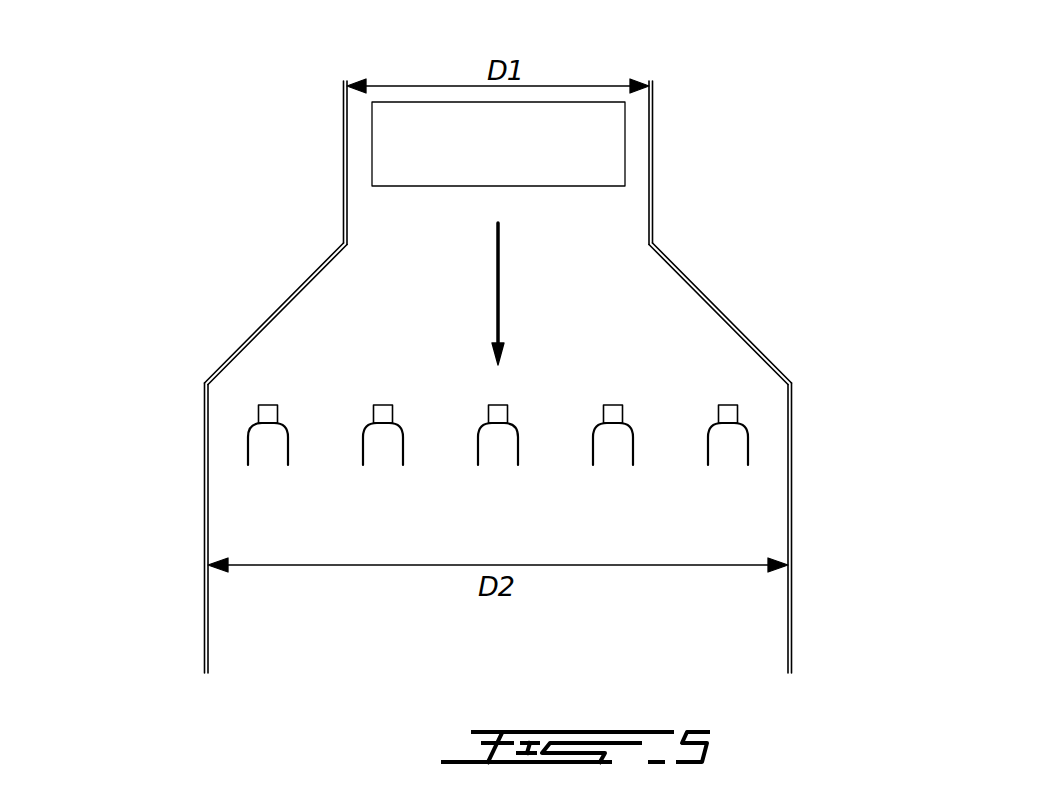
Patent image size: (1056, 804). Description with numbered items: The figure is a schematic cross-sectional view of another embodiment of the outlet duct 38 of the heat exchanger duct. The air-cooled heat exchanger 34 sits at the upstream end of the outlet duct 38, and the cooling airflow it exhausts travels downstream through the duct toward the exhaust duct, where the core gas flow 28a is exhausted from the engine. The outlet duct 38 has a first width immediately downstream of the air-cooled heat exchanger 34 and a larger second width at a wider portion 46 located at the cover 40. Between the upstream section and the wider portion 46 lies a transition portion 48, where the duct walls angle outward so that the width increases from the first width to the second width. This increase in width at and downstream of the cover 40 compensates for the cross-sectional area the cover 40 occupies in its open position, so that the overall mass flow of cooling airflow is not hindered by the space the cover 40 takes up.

The air-cooled heat exchanger 34 is at (362, 142).
The core gas flow 28a is at (496, 281).
The outlet duct 38 is at (617, 377).
The cover 40 is at (680, 445).
The wider portion 46 is at (793, 529).
The transition portion 48 is at (666, 255).